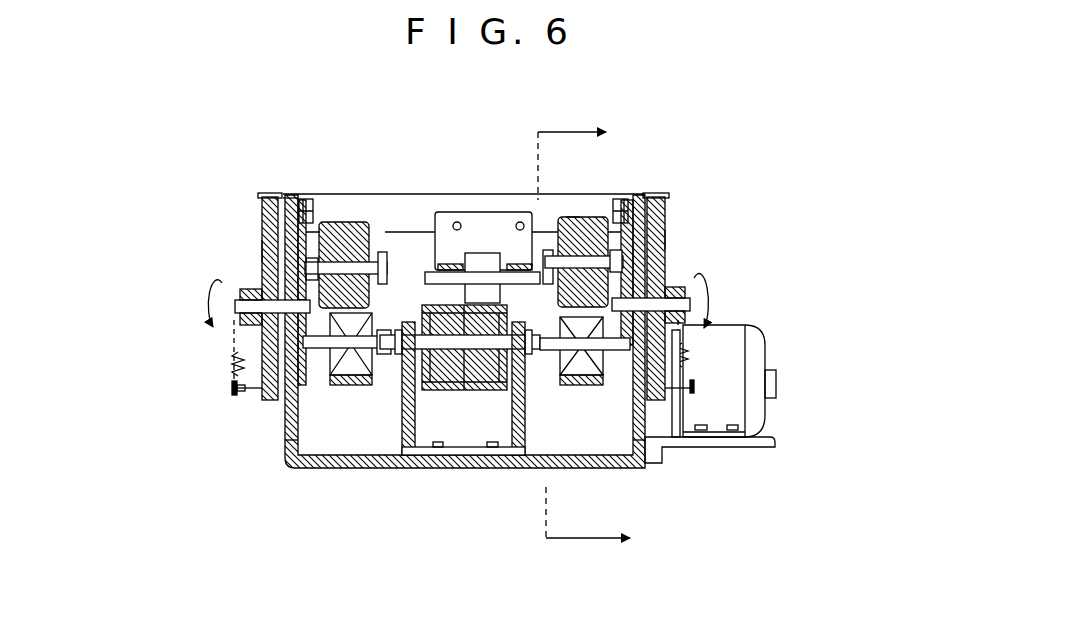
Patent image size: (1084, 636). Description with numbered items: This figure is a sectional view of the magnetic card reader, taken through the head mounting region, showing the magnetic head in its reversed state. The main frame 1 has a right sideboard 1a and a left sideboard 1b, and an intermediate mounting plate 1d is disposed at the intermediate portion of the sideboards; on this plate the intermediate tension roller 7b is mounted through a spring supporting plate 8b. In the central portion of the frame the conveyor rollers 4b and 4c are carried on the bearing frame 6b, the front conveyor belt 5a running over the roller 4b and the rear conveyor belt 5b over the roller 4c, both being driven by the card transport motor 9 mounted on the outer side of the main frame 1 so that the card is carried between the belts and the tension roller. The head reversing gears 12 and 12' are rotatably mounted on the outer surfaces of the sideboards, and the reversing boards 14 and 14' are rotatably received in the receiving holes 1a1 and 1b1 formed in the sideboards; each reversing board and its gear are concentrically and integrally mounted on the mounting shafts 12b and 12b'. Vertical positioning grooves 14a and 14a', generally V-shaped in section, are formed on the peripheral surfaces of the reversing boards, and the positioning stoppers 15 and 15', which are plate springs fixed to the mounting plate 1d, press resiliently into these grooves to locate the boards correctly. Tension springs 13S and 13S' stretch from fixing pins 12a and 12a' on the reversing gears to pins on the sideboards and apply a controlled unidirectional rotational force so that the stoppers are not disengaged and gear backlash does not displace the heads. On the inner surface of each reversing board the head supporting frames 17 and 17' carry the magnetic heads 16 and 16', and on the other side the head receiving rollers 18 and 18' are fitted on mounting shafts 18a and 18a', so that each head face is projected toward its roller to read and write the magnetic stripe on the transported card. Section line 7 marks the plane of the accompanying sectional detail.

The main frame 1 is at (330, 470).
The right sideboard 1a is at (665, 205).
The receiving hole 1a1 is at (736, 229).
The left sideboard 1b is at (297, 195).
The receiving hole 1b1 is at (262, 250).
The intermediate mounting plate 1d is at (422, 215).
The conveyor roller 4b is at (515, 440).
The conveyor roller 4c is at (440, 457).
The front conveyor belt 5a is at (482, 392).
The rear conveyor belt 5b is at (462, 392).
The bearing frame 6b is at (440, 380).
The section line 7 is at (584, 330).
The intermediate tension roller 7b is at (490, 262).
The spring supporting plate 8b is at (458, 245).
The card transport motor 9 is at (762, 360).
The head reversing gear 12 is at (244, 250).
The head reversing gear 12' is at (693, 245).
The fixing pin 12a is at (212, 428).
The fixing pin 12a' is at (757, 424).
The mounting shaft 12b is at (225, 284).
The mounting shaft 12b' is at (714, 290).
The tension spring 13S is at (189, 363).
The tension spring 13S' is at (765, 367).
The reversing board 14 is at (226, 342).
The reversing board 14' is at (692, 286).
The vertical positioning groove 14a is at (250, 313).
The vertical positioning groove 14a' is at (685, 318).
The positioning stopper 15 is at (312, 170).
The positioning stopper 15' is at (647, 150).
The magnetic head 16 is at (370, 246).
The magnetic head 16' is at (592, 418).
The head supporting frame 17 is at (350, 426).
The head supporting frame 17' is at (577, 447).
The head receiving roller 18 is at (346, 227).
The head receiving roller 18' is at (587, 192).
The mounting shaft 18a is at (235, 182).
The mounting shaft 18a' is at (567, 188).